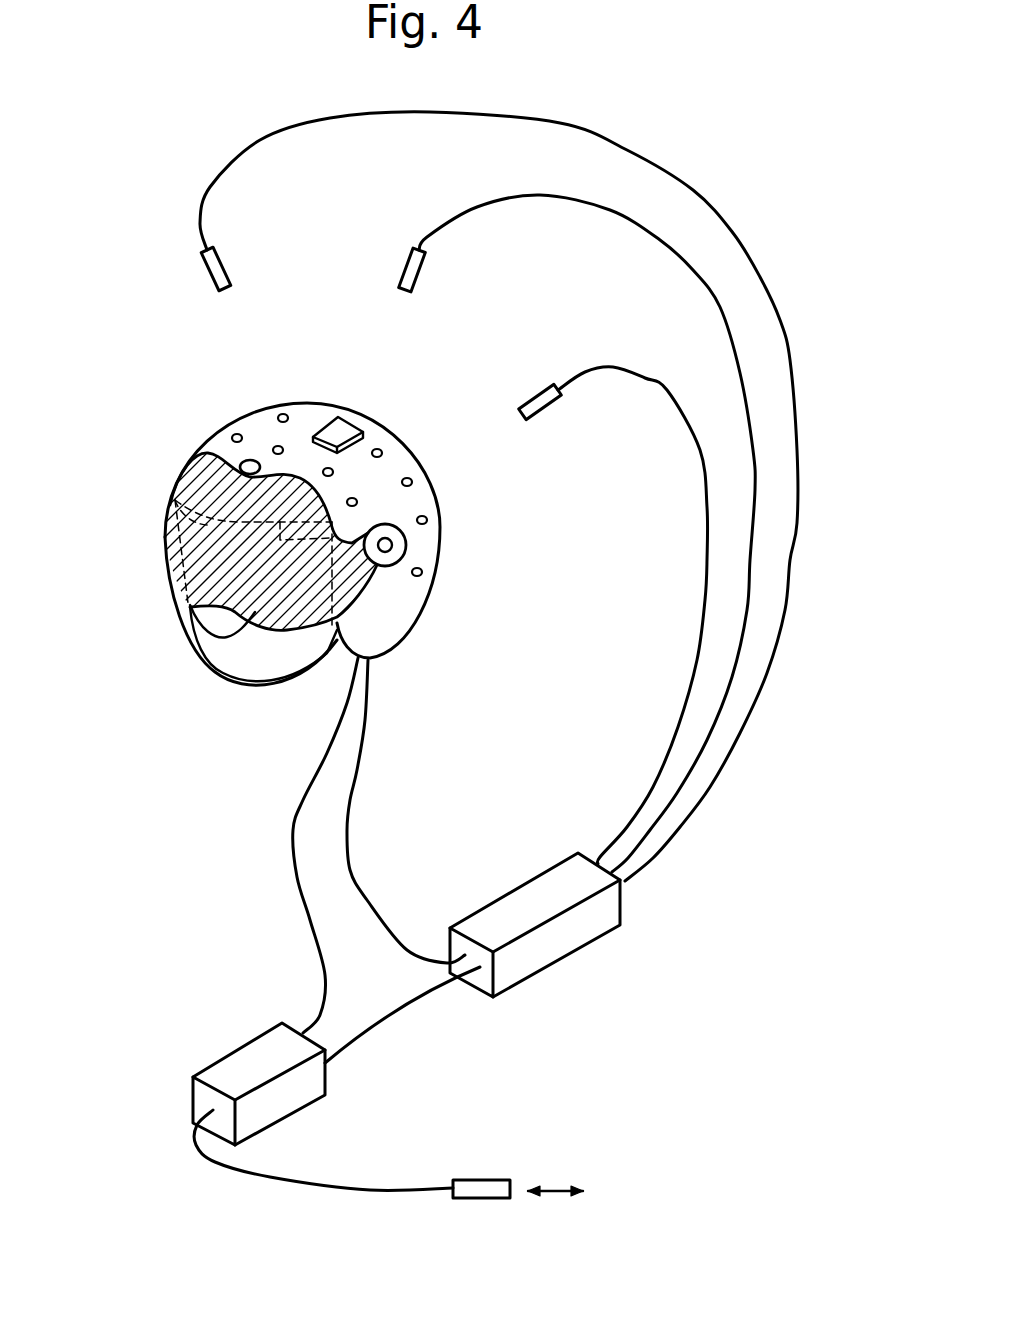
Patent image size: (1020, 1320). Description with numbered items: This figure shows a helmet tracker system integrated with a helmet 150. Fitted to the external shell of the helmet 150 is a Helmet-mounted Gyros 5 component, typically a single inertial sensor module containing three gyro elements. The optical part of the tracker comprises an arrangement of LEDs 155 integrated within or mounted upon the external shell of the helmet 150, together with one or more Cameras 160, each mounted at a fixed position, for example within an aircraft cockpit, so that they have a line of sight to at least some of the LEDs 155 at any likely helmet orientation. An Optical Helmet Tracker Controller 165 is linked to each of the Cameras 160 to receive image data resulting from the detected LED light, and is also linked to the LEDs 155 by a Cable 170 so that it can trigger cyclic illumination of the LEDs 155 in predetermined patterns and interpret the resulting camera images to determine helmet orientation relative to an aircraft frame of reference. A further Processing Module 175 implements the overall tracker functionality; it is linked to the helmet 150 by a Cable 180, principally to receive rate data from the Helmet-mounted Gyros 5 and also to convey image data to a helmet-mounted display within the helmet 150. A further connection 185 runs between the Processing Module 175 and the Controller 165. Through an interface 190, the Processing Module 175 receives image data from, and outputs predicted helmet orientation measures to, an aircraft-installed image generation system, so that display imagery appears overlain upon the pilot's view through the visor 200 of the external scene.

The Helmet-mounted Gyros 5 is at (336, 415).
The helmet 150 is at (410, 627).
The LEDs 155 is at (278, 415).
The Cameras 160 is at (202, 277).
The Optical Helmet Tracker Controller 165 is at (540, 970).
The Cable 170 is at (348, 818).
The Processing Module 175 is at (217, 1060).
The Cable 180 is at (293, 832).
The cable 185 is at (383, 1025).
The interface 190 is at (487, 1180).
The visor 200 is at (208, 558).